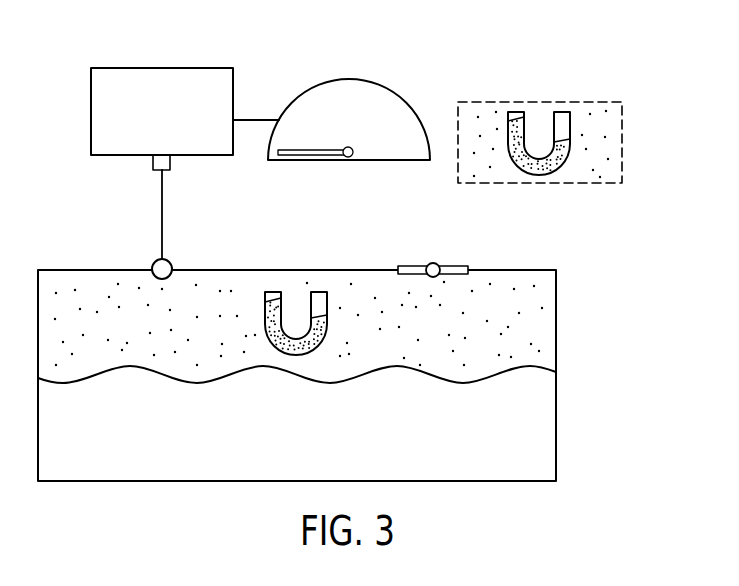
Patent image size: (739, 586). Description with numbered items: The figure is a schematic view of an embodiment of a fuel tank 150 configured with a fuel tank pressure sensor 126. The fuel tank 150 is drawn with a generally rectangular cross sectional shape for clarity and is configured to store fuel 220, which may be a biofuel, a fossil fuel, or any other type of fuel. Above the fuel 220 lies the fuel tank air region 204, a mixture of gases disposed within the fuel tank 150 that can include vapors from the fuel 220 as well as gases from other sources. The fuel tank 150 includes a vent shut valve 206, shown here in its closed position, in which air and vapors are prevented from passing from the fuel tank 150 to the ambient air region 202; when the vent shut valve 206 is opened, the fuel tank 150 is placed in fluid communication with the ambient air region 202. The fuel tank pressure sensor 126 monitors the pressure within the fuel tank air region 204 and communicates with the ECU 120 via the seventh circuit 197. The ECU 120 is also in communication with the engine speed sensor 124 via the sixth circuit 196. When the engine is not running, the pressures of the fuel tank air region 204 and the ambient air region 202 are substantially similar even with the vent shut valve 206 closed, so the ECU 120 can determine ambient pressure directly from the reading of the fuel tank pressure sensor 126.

The ECU 120 is at (128, 68).
The engine speed sensor 124 is at (370, 80).
The fuel tank pressure sensor 126 is at (155, 262).
The fuel tank 150 is at (557, 334).
The sixth circuit 196 is at (252, 119).
The seventh circuit 197 is at (162, 205).
The ambient air region 202 is at (585, 100).
The fuel tank air region 204 is at (526, 298).
The vent shut valve 206 is at (412, 266).
The fuel 220 is at (537, 430).